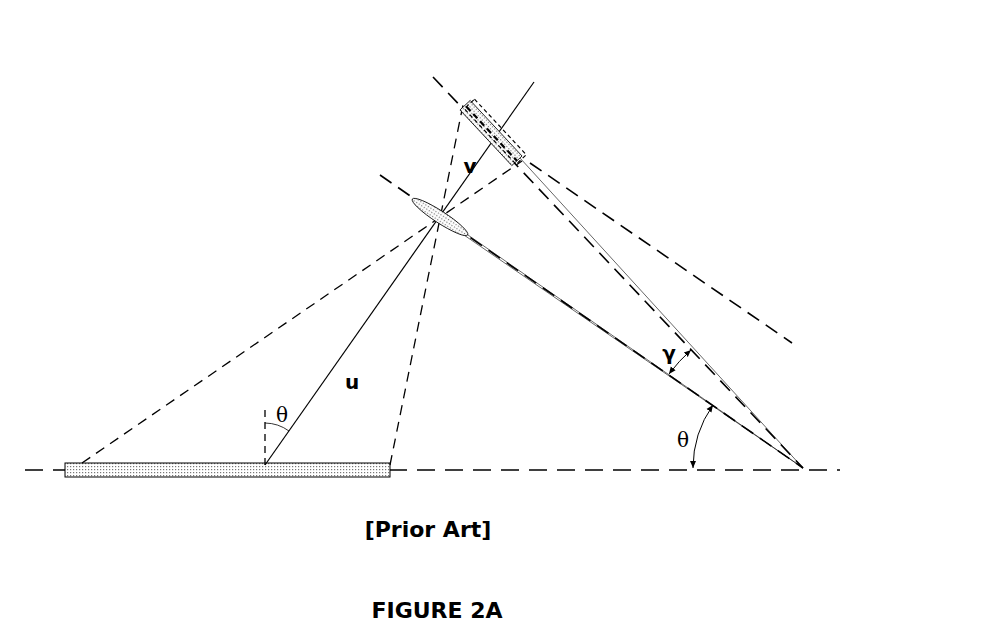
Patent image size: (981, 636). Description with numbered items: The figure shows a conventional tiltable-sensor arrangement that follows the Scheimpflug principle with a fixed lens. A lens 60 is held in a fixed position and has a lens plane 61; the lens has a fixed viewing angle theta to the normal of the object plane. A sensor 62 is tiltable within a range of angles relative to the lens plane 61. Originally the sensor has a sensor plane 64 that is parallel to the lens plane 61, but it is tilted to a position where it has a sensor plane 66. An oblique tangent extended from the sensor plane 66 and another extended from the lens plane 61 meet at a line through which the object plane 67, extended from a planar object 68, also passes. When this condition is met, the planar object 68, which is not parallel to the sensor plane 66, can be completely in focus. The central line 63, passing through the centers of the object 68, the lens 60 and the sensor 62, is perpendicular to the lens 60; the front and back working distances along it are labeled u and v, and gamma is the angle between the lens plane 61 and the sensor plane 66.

The lens 60 is at (425, 200).
The lens plane 61 is at (500, 258).
The sensor 62 is at (522, 147).
The central line 63 is at (528, 88).
The sensor plane 64 is at (697, 275).
The sensor plane 66 is at (730, 392).
The object plane 67 is at (547, 470).
The planar object 68 is at (82, 463).